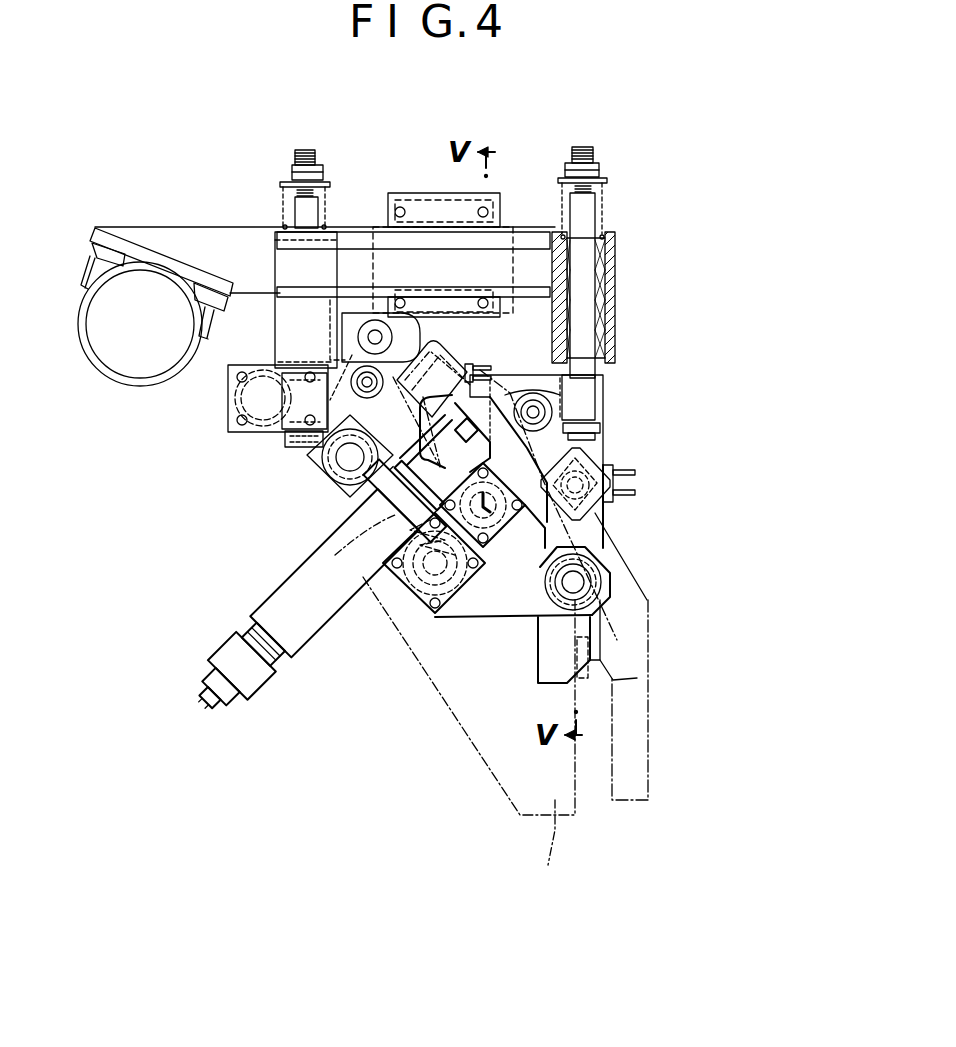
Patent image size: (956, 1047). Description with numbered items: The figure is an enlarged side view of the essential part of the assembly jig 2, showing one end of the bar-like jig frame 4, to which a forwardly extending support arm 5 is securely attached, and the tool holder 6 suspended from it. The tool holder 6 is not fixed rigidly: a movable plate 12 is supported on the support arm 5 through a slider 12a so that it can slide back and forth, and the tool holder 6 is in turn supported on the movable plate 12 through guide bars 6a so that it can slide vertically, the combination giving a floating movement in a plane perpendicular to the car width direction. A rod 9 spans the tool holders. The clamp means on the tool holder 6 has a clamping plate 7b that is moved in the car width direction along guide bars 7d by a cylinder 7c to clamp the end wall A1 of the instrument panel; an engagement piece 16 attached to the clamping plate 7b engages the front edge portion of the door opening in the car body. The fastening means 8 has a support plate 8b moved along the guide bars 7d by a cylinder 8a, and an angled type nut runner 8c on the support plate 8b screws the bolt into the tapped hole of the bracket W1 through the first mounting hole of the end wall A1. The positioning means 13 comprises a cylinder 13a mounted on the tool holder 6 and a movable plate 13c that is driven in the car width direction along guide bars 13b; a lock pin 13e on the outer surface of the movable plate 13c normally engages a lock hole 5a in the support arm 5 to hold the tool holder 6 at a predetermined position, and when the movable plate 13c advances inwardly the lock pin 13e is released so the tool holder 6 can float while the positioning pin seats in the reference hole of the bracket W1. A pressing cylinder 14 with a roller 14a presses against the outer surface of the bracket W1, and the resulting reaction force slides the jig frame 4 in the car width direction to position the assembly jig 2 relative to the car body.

The assembly jig 2 is at (625, 285).
The jig frame 4 is at (127, 372).
The support arm 5 is at (215, 242).
The lock hole 5a is at (337, 322).
The tool holder 6 is at (560, 382).
The guide bar 6a is at (310, 212).
The clamping plate 7b is at (600, 628).
The cylinder 7c is at (427, 610).
The guide bar 7d is at (343, 460).
The fastening means 8 is at (278, 580).
The cylinder 8a is at (483, 600).
The support plate 8b is at (532, 600).
The angled type nut runner 8c is at (283, 622).
The rod 9 is at (245, 432).
The movable plate 12 is at (528, 240).
The slider 12a is at (500, 195).
The positioning means 13 is at (444, 345).
The cylinder 13a is at (445, 375).
The guide bar 13b is at (540, 412).
The movable plate 13c is at (395, 333).
The lock pin 13e is at (360, 352).
The pressing cylinder 14 is at (590, 460).
The roller 14a is at (605, 500).
The engagement piece 16 is at (497, 385).
The bracket W1 is at (648, 800).
The end wall A1 is at (557, 850).